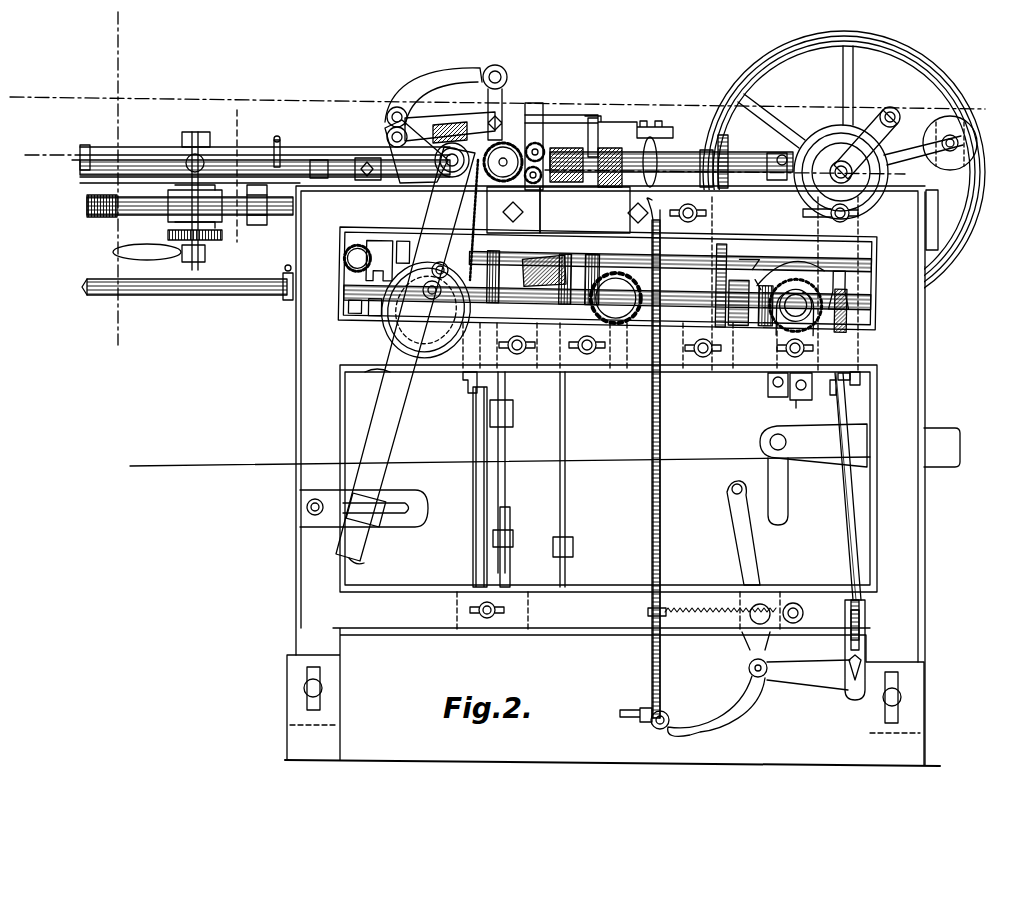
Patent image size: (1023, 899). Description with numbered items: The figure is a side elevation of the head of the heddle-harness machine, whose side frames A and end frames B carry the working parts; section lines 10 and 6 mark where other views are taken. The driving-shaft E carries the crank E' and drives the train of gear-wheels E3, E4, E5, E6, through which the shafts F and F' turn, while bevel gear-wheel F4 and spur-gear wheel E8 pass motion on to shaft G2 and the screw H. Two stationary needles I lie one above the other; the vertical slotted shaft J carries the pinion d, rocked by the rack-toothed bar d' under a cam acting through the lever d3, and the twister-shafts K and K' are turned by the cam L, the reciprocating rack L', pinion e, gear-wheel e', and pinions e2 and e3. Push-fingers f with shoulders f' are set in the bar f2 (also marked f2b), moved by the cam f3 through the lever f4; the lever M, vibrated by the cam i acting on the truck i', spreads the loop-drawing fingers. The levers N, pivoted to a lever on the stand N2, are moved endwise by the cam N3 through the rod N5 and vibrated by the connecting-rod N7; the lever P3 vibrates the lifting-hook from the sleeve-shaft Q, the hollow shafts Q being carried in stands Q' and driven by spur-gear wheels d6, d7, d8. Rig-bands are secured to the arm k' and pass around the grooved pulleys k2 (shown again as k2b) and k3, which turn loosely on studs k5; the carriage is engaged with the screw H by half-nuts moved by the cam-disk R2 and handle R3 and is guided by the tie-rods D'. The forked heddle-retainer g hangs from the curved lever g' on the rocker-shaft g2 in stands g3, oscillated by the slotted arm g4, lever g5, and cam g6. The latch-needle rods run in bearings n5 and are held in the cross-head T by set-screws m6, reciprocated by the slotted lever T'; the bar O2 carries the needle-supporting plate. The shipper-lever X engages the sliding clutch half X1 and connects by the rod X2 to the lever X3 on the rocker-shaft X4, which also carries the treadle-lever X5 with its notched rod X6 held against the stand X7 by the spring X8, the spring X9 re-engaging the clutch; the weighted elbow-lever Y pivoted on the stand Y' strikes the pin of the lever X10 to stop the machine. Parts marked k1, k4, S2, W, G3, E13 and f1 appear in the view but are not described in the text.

The section line 10 10 is at (497, 178).
The section line 6 6 is at (234, 175).
The side frames A is at (535, 476).
The stand N2 is at (607, 294).
The bar d' is at (670, 255).
The spur-gear wheel E8 is at (350, 252).
The gear-wheel E6 is at (350, 256).
The lever T' is at (379, 260).
The lever g5 is at (402, 251).
The lever M is at (635, 271).
The cam N3 is at (597, 280).
The rack k4 is at (528, 288).
The gear-wheel E5 is at (612, 318).
The gear-wheel E4 is at (625, 356).
The spur-gear wheel d7 is at (727, 245).
The collar E13 is at (738, 301).
The spur-gear wheel d8 is at (722, 300).
The bevel gear-wheel F4 is at (765, 300).
The shaft F is at (795, 303).
The cam f3 is at (790, 276).
The lever f4 is at (768, 260).
The shipper-lever X is at (838, 262).
The spring X9 is at (850, 311).
The cam L is at (426, 310).
The reciprocating rack L' is at (405, 355).
The shaft F' is at (432, 290).
The grooved pulley k3 is at (426, 265).
The grooved pulley k2 is at (457, 189).
The pulley S2 is at (450, 178).
The stands g3 is at (416, 152).
The rocker-shaft g2 is at (388, 116).
The cam g6 is at (388, 135).
The curved lever g' is at (446, 95).
The heddle-eye retainer g is at (459, 116).
The slotted arm g4 is at (450, 143).
The heddle-needles I is at (265, 157).
The shaft end W is at (72, 157).
The adjustable arm k' is at (276, 147).
The bearings n5 is at (318, 170).
The set-screws m6 is at (367, 178).
The cross-head T is at (354, 143).
The end frames B is at (195, 201).
The tie-rods D' is at (190, 211).
The screw-shaft H is at (102, 211).
The rectangular bar O2 is at (257, 210).
The cam-disk R2 is at (197, 242).
The handle R3 is at (159, 246).
The shaft G2 is at (184, 295).
The end block G3 is at (284, 293).
The pinion e is at (503, 163).
The gear-wheel e' is at (516, 168).
The pinion e2 is at (531, 145).
The pinion e3 is at (527, 181).
The twister-shaft K is at (556, 137).
The twister-shaft K' is at (529, 190).
The vertical slotted shaft J is at (535, 146).
The connecting-rod N7 is at (513, 211).
The pinion d is at (585, 217).
The stand X7 is at (633, 223).
The shoulder f' is at (551, 194).
The push-fingers f is at (566, 156).
The bar f2 is at (596, 167).
The lever P3 is at (596, 120).
The hollow shaft Q is at (671, 162).
The stands Q' is at (705, 168).
The spur-gear wheel d6 is at (725, 145).
The lever f1 is at (775, 153).
The truck i' is at (768, 156).
The cam i is at (779, 181).
The driving-shaft E is at (844, 172).
The gear-wheel E3 is at (841, 172).
The crank E' is at (867, 143).
The horizontal studs k5 is at (958, 142).
The grooved pulley k2b is at (956, 145).
The levers N is at (507, 441).
The rod k1 is at (470, 485).
The rod N5 is at (570, 479).
The rod X6 is at (643, 458).
The spring X8 is at (725, 618).
The treadle-lever X5 is at (692, 706).
The rod X2 is at (750, 668).
The lever X3 is at (808, 675).
The rocker-shaft X4 is at (851, 652).
The sliding half of the clutch X1 is at (841, 486).
The stand Y' is at (813, 445).
The weighted elbow-lever Y is at (864, 476).
The lever X10 is at (743, 533).
The lever d3 is at (801, 394).
The bar f2b is at (778, 389).